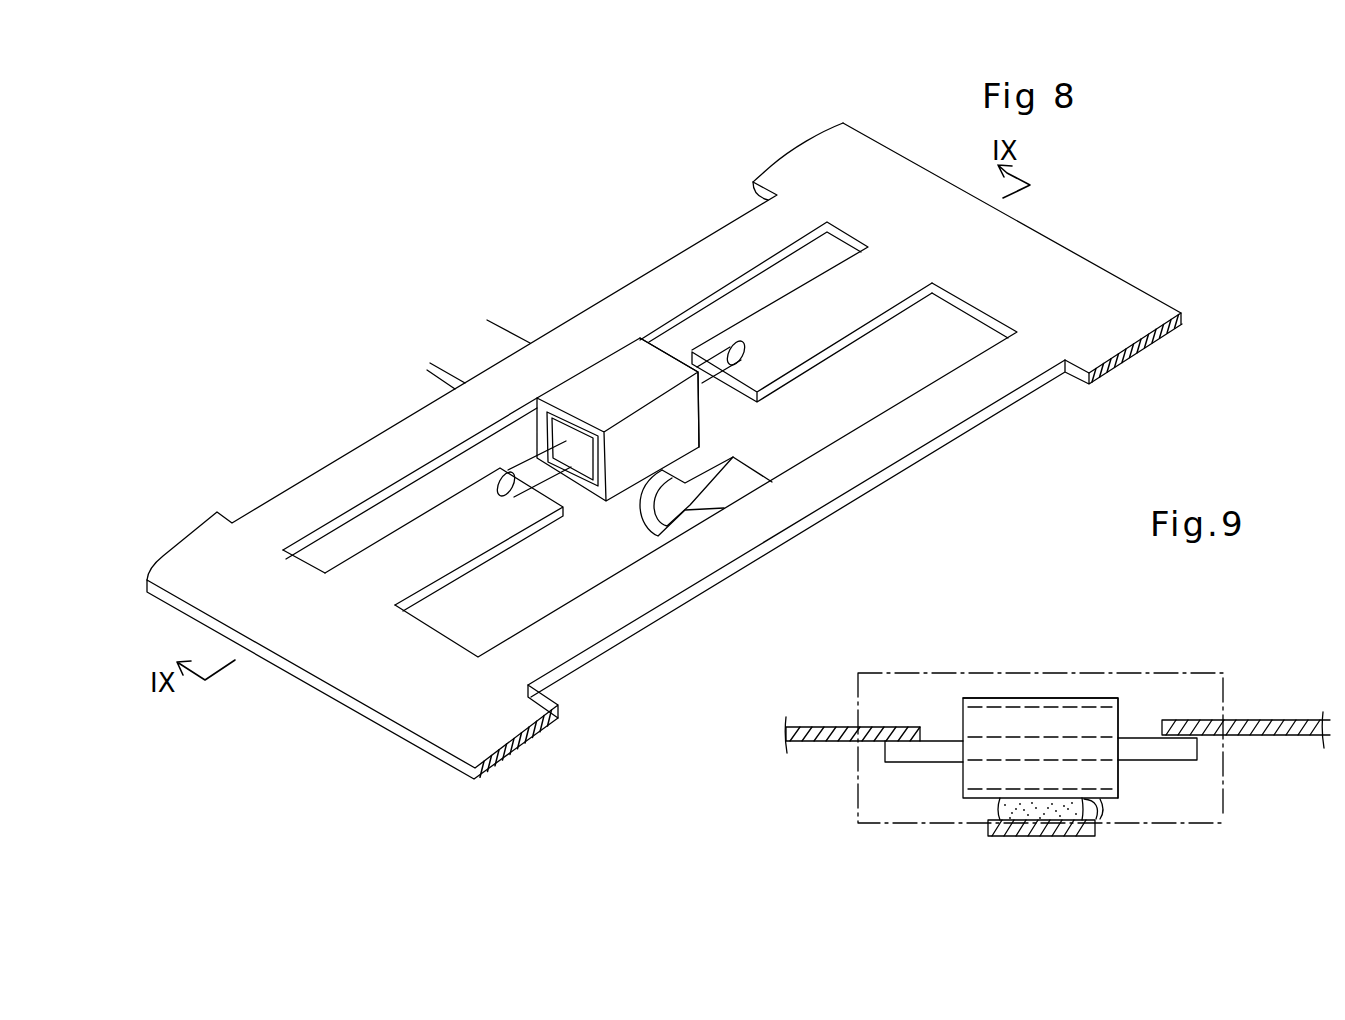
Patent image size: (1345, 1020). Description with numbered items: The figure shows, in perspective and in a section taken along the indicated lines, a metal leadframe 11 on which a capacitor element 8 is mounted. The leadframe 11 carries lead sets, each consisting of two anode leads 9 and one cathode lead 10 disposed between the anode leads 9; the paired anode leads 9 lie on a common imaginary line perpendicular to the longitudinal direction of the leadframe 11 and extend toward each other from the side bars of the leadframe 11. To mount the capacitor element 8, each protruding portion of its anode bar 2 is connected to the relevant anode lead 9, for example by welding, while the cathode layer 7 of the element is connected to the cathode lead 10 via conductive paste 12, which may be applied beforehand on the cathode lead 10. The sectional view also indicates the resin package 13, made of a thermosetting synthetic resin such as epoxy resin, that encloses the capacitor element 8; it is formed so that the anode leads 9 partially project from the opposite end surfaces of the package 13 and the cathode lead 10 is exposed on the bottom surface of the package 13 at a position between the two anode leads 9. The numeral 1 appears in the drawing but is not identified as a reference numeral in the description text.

In FIG. 8, the electronic component 1 is at (557, 434).
In FIG. 9, the electronic component 1 is at (993, 708).
In FIG. 9, the anode bar 2 is at (918, 758).
In FIG. 9, the cathode layer 7 is at (1110, 805).
In FIG. 8, the capacitor element 8 is at (604, 345).
In FIG. 9, the capacitor element 8 is at (1078, 692).
In FIG. 8, the anode leads 9 is at (423, 530).
In FIG. 9, the anode leads 9 is at (816, 735).
In FIG. 8, the cathode lead 10 is at (640, 510).
In FIG. 9, the cathode lead 10 is at (1052, 838).
In FIG. 8, the leadframe 11 is at (1107, 252).
In FIG. 9, the leadframe 11 is at (1321, 686).
In FIG. 9, the conductive paste 12 is at (997, 818).
In FIG. 9, the resin package 13 is at (1190, 672).